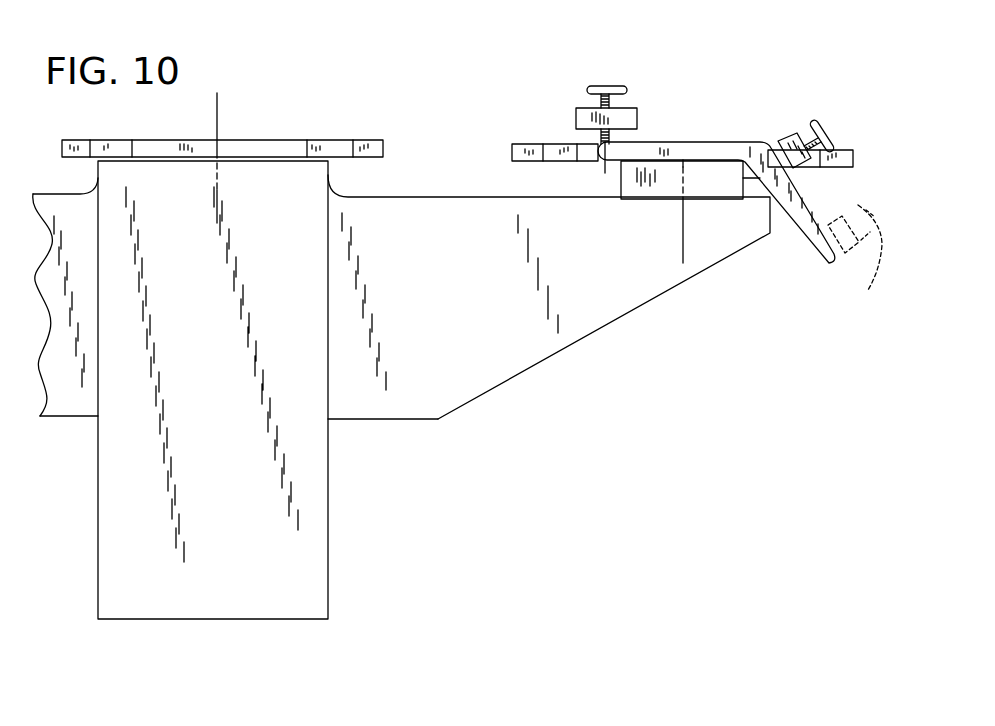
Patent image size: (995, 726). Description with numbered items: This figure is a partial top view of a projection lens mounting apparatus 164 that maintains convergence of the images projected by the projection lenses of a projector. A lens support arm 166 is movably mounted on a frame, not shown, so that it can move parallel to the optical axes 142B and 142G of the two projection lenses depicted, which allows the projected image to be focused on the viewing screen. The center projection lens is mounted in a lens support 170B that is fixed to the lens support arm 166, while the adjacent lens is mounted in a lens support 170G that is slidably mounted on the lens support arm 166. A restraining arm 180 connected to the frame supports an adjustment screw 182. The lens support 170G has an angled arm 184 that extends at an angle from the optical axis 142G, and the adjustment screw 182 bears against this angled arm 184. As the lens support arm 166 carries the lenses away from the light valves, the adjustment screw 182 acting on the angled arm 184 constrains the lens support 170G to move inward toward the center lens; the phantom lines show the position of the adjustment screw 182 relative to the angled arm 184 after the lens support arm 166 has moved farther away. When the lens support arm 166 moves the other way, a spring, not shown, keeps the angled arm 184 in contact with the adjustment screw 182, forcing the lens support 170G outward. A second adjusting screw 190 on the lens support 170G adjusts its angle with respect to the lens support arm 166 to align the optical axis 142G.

The optical axis 142B is at (218, 100).
The optical axis 142G is at (683, 220).
The mounting apparatus 164 is at (613, 387).
The lens support arm 166 is at (373, 423).
The lens support 170B is at (336, 140).
The lens support 170G is at (540, 143).
The restraining arm 180 is at (788, 139).
The adjustment screw 182 is at (824, 122).
The angled arm 184 is at (806, 203).
The second adjusting screw 190 is at (628, 91).